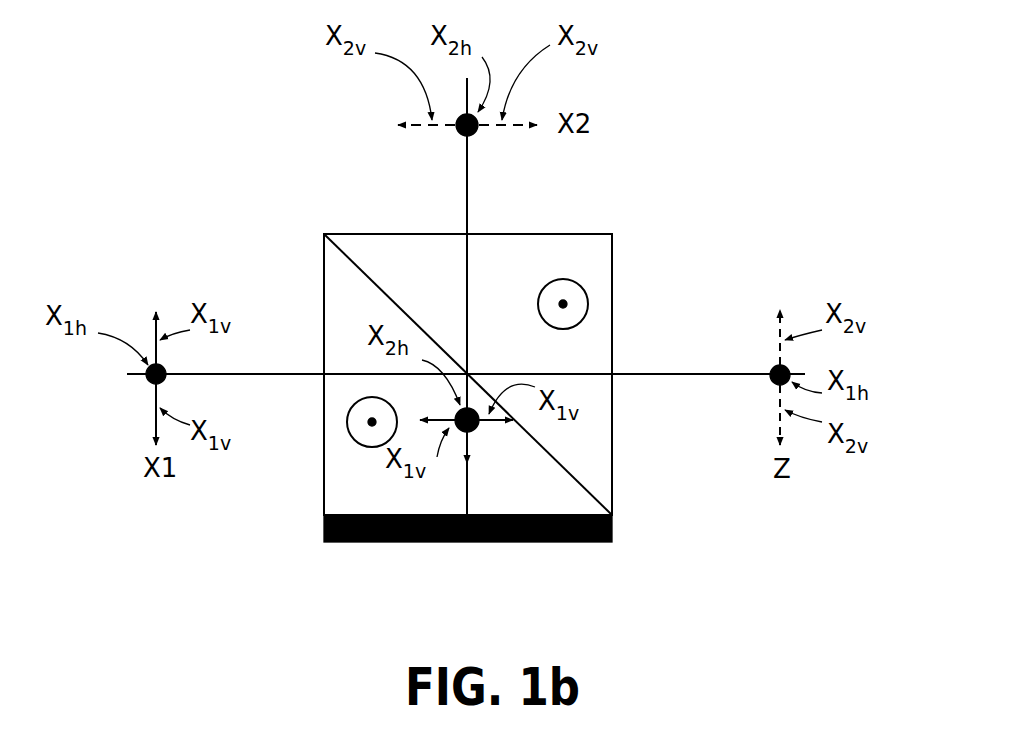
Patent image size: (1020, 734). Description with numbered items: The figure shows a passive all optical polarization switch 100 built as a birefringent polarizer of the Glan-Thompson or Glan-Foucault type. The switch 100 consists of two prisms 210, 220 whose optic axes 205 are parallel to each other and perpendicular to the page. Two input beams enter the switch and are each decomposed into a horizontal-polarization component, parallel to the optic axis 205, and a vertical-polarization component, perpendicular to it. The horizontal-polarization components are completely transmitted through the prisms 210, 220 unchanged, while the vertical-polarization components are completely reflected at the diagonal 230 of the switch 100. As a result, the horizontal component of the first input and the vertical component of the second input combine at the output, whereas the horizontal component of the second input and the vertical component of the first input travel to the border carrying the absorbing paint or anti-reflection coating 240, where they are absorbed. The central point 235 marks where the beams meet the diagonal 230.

The passive all optical polarization switch 100 is at (190, 72).
The optic axis 205 is at (536, 295).
The prism 210 is at (320, 465).
The prism 220 is at (615, 256).
The diagonal 230 is at (575, 470).
The central pivot point 235 is at (470, 440).
The absorbing paint or anti-reflection coating 240 is at (585, 545).